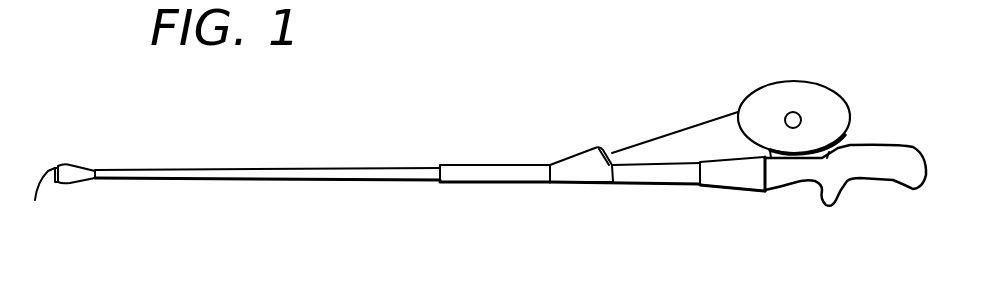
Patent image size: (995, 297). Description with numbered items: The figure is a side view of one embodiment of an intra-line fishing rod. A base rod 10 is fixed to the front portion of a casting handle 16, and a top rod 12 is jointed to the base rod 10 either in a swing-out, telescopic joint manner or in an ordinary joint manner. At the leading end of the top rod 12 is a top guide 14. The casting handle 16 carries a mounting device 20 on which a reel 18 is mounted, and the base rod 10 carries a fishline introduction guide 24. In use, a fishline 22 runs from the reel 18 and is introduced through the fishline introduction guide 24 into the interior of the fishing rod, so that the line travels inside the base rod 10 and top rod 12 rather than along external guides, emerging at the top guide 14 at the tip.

The base rod 10 is at (502, 178).
The top rod 12 is at (258, 179).
The top guide 14 is at (70, 183).
The casting handle 16 is at (872, 168).
The reel 18 is at (797, 90).
The mounting device 20 is at (738, 183).
The fishline 22 is at (678, 128).
The fishline introduction guide 24 is at (585, 157).